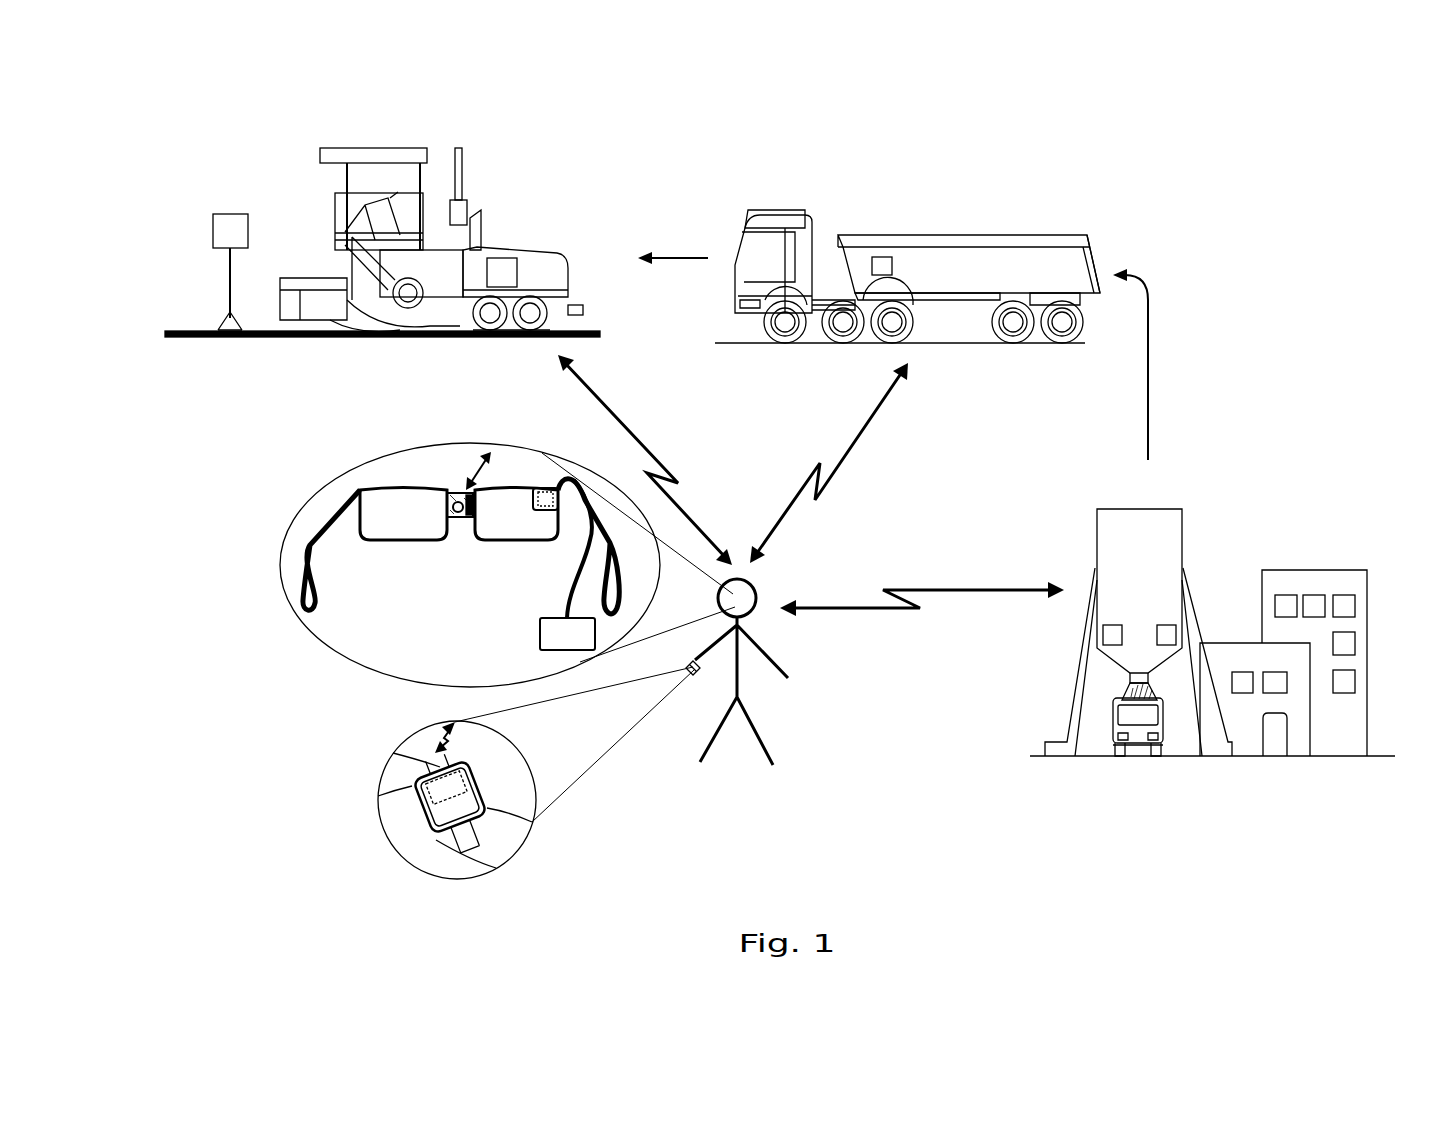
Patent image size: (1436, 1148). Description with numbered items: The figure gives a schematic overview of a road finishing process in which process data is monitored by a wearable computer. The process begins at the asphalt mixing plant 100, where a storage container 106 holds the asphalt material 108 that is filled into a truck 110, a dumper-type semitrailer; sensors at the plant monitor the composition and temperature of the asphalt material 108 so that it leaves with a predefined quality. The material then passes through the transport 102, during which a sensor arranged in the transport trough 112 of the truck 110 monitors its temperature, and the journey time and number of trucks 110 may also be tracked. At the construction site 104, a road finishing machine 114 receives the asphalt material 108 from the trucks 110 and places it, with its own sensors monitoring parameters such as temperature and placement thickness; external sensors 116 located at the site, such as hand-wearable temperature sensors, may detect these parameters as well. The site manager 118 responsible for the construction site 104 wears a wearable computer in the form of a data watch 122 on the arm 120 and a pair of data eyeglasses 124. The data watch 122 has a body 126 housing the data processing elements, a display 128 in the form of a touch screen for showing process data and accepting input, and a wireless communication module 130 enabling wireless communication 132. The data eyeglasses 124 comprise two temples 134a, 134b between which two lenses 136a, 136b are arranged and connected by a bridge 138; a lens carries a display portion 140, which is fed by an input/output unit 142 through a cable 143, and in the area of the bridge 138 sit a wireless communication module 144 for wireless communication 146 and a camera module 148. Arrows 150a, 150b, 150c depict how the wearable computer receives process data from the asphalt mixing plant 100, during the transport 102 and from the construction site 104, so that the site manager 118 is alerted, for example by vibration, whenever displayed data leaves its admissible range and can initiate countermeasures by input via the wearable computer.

The asphalt mixing plant 100 is at (1246, 782).
The transport 102 is at (970, 189).
The construction site 104 is at (386, 122).
The storage container 106 is at (1157, 574).
The asphalt material 108 is at (294, 337).
The truck 110 is at (785, 214).
The transport trough 112 is at (1050, 254).
The road finishing machine 114 is at (530, 256).
The external sensors 116 is at (233, 212).
The site manager 118 is at (740, 684).
The arm 120 is at (386, 800).
The data watch 122 is at (417, 837).
The data eyeglasses 124 is at (272, 587).
The body 126 is at (490, 817).
The display 128 is at (456, 798).
The wireless communication module 130 is at (430, 768).
The wireless communication 132 is at (438, 741).
The temple 134a is at (327, 533).
The temple 134b is at (603, 537).
The lens 136a is at (403, 514).
The lens 136b is at (516, 514).
The bridge 138 is at (455, 522).
The display portion 140 is at (546, 486).
The input/output unit 142 is at (540, 634).
The cable 143 is at (586, 556).
The wireless communication module 144 is at (451, 488).
The wireless communication 146 is at (483, 462).
The camera module 148 is at (466, 522).
The arrow 150a is at (978, 589).
The arrow 150b is at (856, 446).
The arrow 150c is at (631, 427).